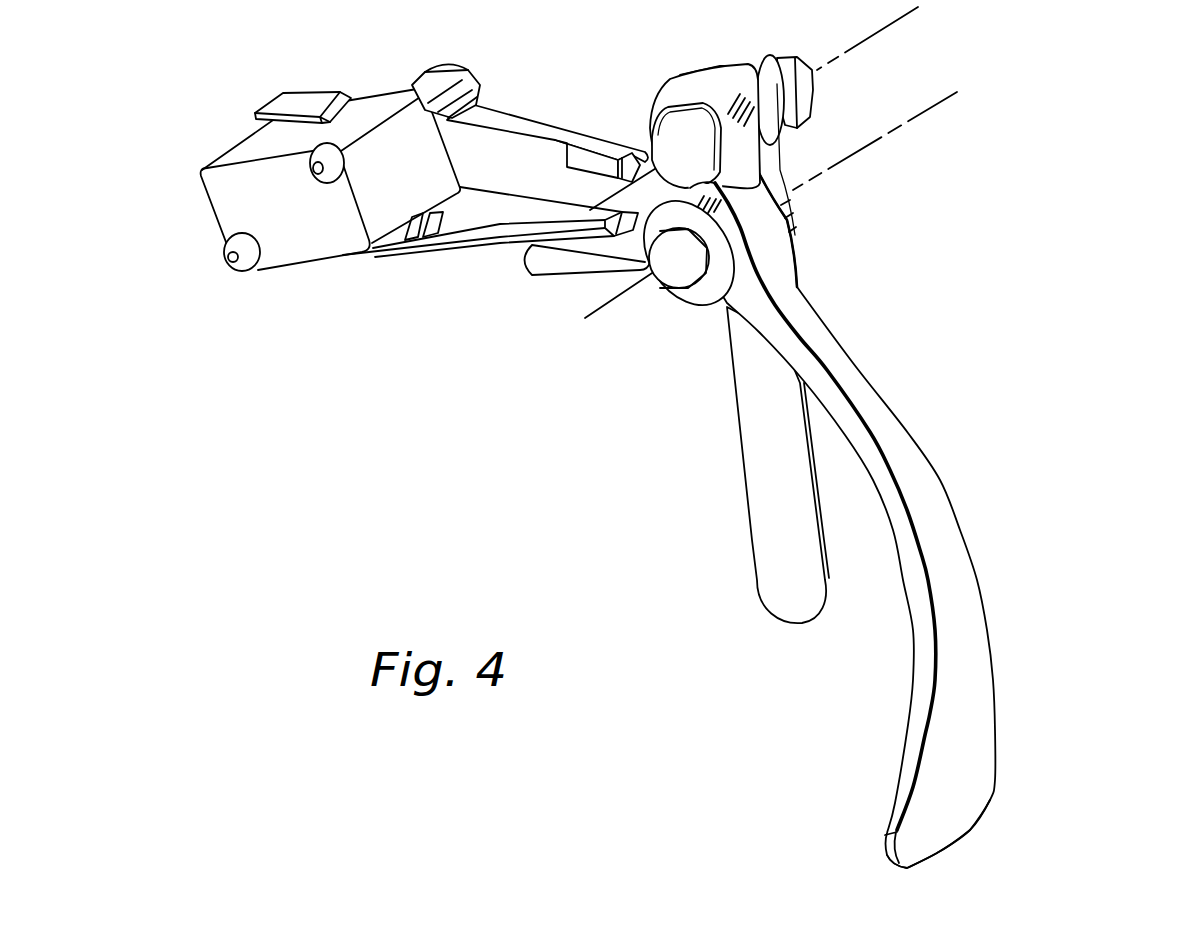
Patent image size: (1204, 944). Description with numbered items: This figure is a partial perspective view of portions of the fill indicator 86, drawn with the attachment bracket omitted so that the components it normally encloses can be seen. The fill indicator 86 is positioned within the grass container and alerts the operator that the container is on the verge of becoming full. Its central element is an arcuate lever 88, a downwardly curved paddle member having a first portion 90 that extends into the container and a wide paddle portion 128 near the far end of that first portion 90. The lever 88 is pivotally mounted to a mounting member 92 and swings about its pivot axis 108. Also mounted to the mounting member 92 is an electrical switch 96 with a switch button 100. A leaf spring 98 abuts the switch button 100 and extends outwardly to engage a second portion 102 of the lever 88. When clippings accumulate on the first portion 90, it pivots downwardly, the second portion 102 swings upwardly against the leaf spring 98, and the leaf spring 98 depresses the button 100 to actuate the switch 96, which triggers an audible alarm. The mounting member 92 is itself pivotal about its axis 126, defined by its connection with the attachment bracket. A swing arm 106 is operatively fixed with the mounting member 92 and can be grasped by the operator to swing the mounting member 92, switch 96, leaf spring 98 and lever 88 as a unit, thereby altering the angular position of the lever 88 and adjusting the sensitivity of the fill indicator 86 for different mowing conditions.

The fill indicator 86 is at (1100, 270).
The lever 88 is at (958, 530).
The first portion 90 is at (983, 730).
The mounting member 92 is at (536, 122).
The electrical switch 96 is at (363, 113).
The leaf spring 98 is at (500, 245).
The switch button 100 is at (433, 225).
The second portion 102 is at (562, 258).
The swing arm 106 is at (757, 443).
The pivot axis 108 is at (860, 153).
The axis 126 is at (876, 36).
The wide portion 128 is at (967, 803).